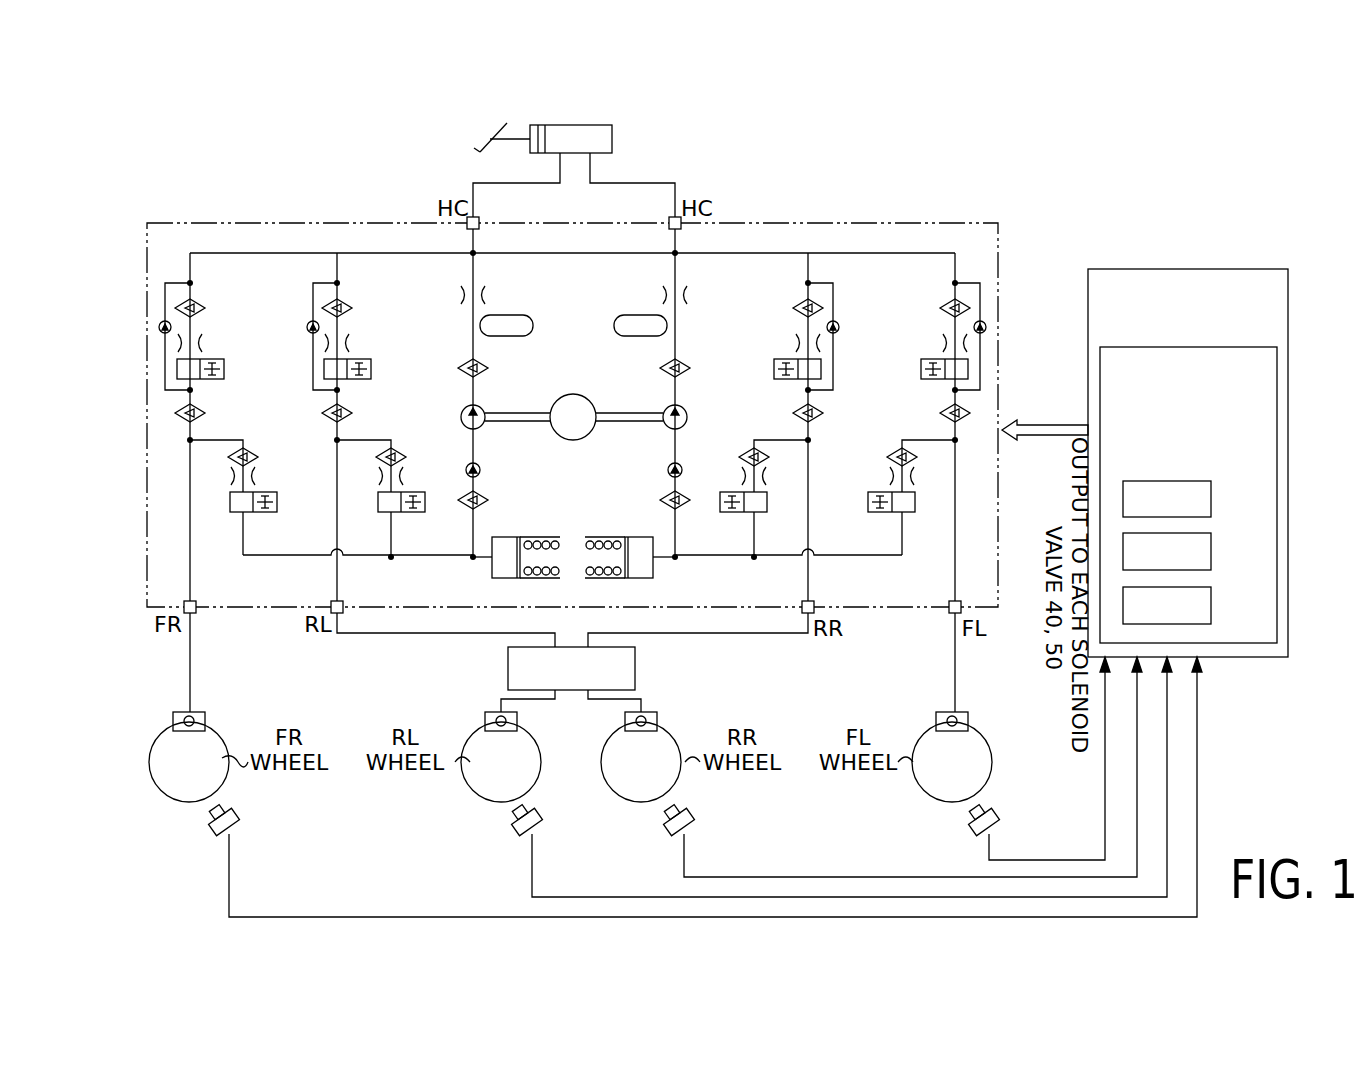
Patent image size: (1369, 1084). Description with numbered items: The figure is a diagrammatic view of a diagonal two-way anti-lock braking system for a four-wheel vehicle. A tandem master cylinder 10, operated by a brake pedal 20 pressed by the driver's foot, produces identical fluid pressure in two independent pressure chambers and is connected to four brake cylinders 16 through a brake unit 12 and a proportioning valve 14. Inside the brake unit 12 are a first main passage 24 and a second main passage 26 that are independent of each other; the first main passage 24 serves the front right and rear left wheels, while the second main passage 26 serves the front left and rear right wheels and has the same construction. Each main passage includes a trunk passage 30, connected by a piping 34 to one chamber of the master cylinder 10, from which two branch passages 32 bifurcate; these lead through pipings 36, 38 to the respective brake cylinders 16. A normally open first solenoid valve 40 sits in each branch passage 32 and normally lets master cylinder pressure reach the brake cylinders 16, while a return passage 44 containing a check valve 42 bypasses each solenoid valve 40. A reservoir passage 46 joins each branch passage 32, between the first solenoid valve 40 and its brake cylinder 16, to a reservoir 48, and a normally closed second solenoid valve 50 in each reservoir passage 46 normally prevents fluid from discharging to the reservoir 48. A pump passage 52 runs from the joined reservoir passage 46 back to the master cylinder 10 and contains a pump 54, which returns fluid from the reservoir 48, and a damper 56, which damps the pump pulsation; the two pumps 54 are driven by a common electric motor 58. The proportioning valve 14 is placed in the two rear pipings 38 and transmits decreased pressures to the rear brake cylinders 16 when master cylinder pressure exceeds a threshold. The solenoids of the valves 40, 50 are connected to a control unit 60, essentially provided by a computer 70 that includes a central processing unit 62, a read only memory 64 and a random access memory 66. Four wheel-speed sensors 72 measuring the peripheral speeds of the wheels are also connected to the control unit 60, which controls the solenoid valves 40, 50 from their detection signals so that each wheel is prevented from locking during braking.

The master cylinder 10 is at (600, 141).
The brake unit 12 is at (872, 221).
The proportioning valve 14 is at (635, 667).
The brake cylinder 16 is at (206, 720).
The brake pedal 20 is at (490, 148).
The first main passage 24 is at (345, 240).
The second main passage 26 is at (773, 240).
The trunk passage 30 is at (385, 250).
The branch passage 32 is at (213, 250).
The piping 34 is at (473, 183).
The piping 36 is at (191, 647).
The piping 38 is at (398, 634).
The first solenoid valve 40 is at (208, 358).
The check valve 42 is at (159, 332).
The return passage 44 is at (165, 297).
The reservoir passage 46 is at (222, 440).
The reservoir 48 is at (502, 540).
The second solenoid valve 50 is at (270, 492).
The pump passage 52 is at (473, 530).
The pump 54 is at (460, 415).
The damper 56 is at (507, 325).
The electric motor 58 is at (573, 394).
The control unit 60 is at (1157, 268).
The central processing unit 62 is at (1208, 500).
The read only memory 64 is at (1208, 555).
The random access memory 66 is at (1208, 608).
The computer 70 is at (1270, 370).
The wheel-speed sensor 72 is at (245, 828).